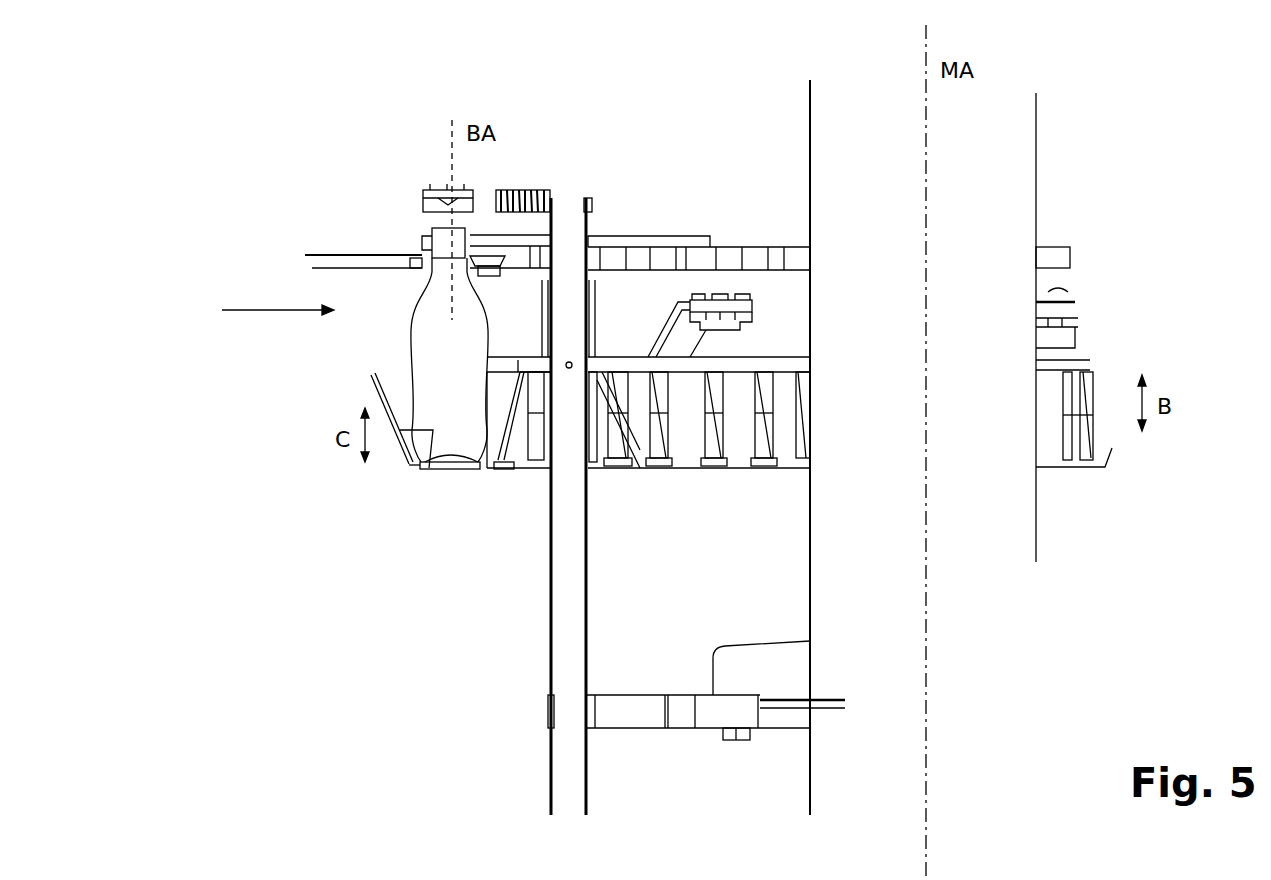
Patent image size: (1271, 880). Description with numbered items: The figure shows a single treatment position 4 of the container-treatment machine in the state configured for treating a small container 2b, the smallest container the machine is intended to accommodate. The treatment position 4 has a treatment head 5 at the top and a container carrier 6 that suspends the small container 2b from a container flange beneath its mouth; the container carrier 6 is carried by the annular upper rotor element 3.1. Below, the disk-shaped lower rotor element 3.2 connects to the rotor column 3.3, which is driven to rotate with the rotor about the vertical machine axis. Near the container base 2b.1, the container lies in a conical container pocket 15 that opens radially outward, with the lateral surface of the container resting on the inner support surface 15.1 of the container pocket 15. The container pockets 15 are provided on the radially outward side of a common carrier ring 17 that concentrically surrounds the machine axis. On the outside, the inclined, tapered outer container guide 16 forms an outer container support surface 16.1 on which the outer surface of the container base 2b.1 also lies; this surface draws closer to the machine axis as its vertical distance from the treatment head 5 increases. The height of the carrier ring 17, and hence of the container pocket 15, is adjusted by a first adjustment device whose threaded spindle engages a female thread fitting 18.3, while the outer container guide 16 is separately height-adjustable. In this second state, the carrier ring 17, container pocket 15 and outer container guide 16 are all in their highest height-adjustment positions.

The treatment head 5 is at (425, 190).
The container carrier 6 is at (430, 238).
The treatment position 4 is at (263, 318).
The small container 2b is at (425, 341).
The container base 2b.1 is at (413, 465).
The outer container guide 16 is at (373, 375).
The outer container support surface 16.1 is at (429, 468).
The container pocket 15 is at (497, 440).
The inner support surface 15.1 is at (497, 392).
The upper rotor element 3.1 is at (688, 257).
The female thread fitting 18.3 is at (744, 308).
The carrier ring 17 is at (703, 420).
The lower rotor element 3.2 is at (645, 708).
The rotor column 3.3 is at (1012, 517).